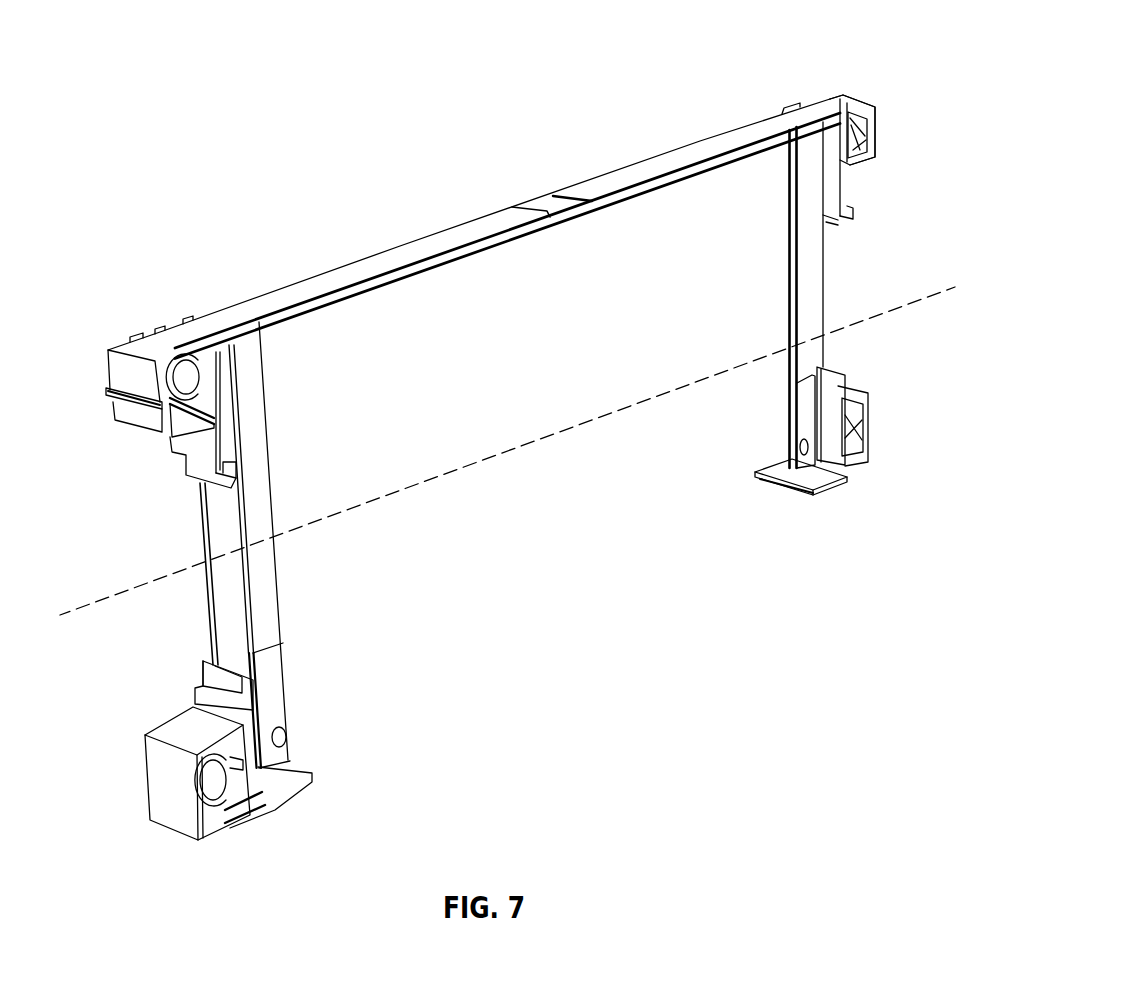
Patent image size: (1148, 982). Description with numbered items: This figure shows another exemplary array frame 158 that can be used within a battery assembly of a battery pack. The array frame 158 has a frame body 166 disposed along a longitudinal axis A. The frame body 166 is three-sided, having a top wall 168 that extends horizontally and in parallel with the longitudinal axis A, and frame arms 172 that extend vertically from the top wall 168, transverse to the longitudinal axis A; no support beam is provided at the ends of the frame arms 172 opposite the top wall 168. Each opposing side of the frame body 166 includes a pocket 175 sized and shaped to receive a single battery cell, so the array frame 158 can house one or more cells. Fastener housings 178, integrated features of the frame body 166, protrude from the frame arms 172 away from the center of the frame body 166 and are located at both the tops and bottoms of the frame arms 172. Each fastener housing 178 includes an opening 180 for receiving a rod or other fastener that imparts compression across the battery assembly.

The array frame 158 is at (400, 200).
The frame body 166 is at (715, 104).
The top wall 168 is at (318, 285).
The frame arms 172 is at (814, 265).
The pocket 175 is at (770, 421).
The fastener housings 178 is at (128, 372).
The opening 180 is at (180, 378).
The longitudinal axis A is at (916, 300).